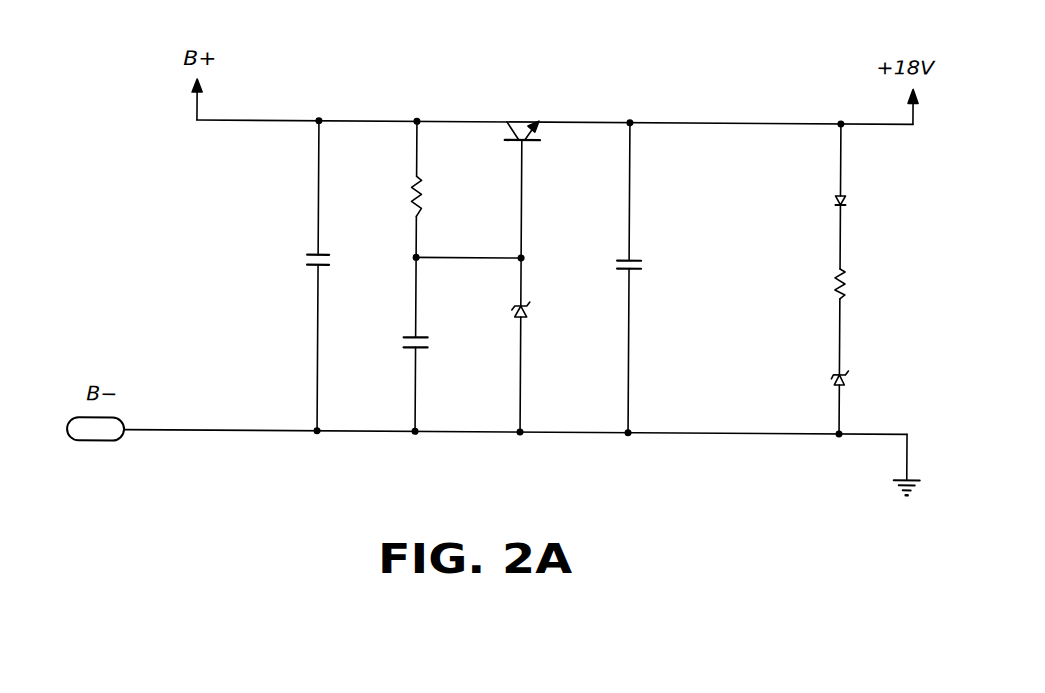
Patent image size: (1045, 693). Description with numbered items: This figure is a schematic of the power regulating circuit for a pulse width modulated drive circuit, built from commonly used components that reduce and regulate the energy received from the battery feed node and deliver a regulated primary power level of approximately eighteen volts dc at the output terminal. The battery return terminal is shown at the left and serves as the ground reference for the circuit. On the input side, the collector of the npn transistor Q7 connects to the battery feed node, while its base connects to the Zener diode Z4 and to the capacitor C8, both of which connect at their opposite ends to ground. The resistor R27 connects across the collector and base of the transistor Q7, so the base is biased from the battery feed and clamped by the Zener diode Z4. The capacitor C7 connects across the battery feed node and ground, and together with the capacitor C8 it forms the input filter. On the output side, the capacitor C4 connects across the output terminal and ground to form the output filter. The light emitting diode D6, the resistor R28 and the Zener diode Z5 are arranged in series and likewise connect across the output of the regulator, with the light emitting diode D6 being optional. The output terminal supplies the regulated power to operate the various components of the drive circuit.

The capacitor C7 is at (305, 262).
The resistor R27 is at (422, 196).
The capacitor C8 is at (402, 345).
The npn transistor Q7 is at (522, 132).
The Zener diode Z4 is at (530, 312).
The capacitor C4 is at (615, 263).
The light emitting diode D6 is at (834, 198).
The resistor R28 is at (834, 276).
The Zener diode Z5 is at (832, 377).